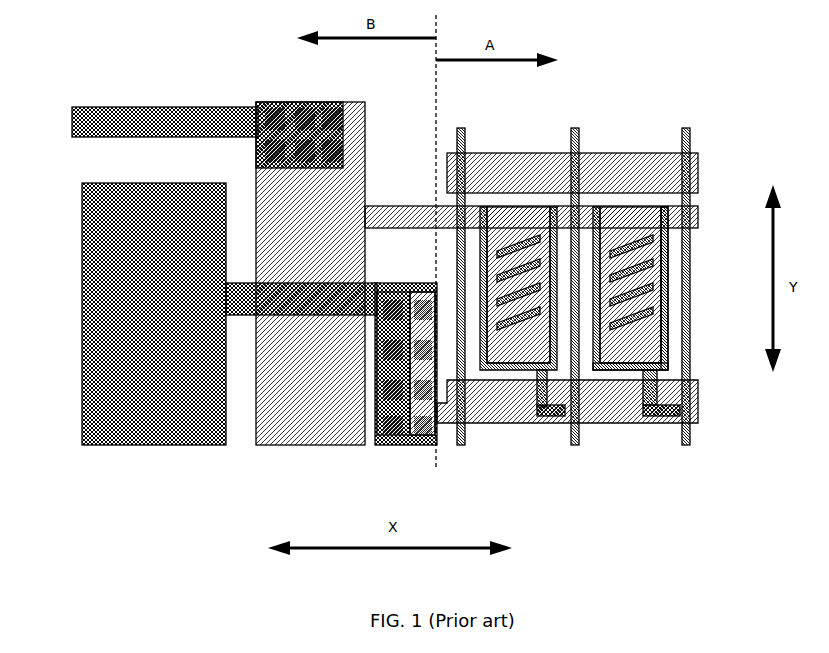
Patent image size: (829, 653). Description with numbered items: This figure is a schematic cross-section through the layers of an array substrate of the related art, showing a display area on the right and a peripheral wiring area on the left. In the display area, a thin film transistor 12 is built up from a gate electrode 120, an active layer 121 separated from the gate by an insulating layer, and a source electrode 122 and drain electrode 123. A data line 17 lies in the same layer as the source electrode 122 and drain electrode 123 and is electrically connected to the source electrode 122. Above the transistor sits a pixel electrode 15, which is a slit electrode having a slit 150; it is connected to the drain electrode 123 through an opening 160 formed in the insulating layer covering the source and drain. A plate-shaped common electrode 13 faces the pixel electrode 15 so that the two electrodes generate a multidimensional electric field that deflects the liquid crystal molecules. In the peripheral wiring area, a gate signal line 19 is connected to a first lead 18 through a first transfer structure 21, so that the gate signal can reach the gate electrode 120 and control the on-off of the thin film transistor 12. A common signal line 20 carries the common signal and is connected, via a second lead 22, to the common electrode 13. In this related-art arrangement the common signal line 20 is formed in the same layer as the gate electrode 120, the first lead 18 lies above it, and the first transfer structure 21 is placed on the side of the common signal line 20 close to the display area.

The thin film transistor 12 is at (521, 356).
The gate electrode 120 is at (524, 398).
The active layer 121 is at (545, 415).
The source electrode 122 is at (562, 418).
The drain electrode 123 is at (528, 385).
The common electrode 13 is at (658, 333).
The pixel electrode 15 is at (640, 372).
The data line 17 is at (692, 432).
The first lead 18 is at (244, 316).
The gate signal line 19 is at (163, 447).
The common signal line 20 is at (366, 140).
The first transfer structure 21 is at (428, 446).
The second lead 22 is at (393, 206).
The slit 150 is at (668, 322).
The opening 160 is at (660, 364).